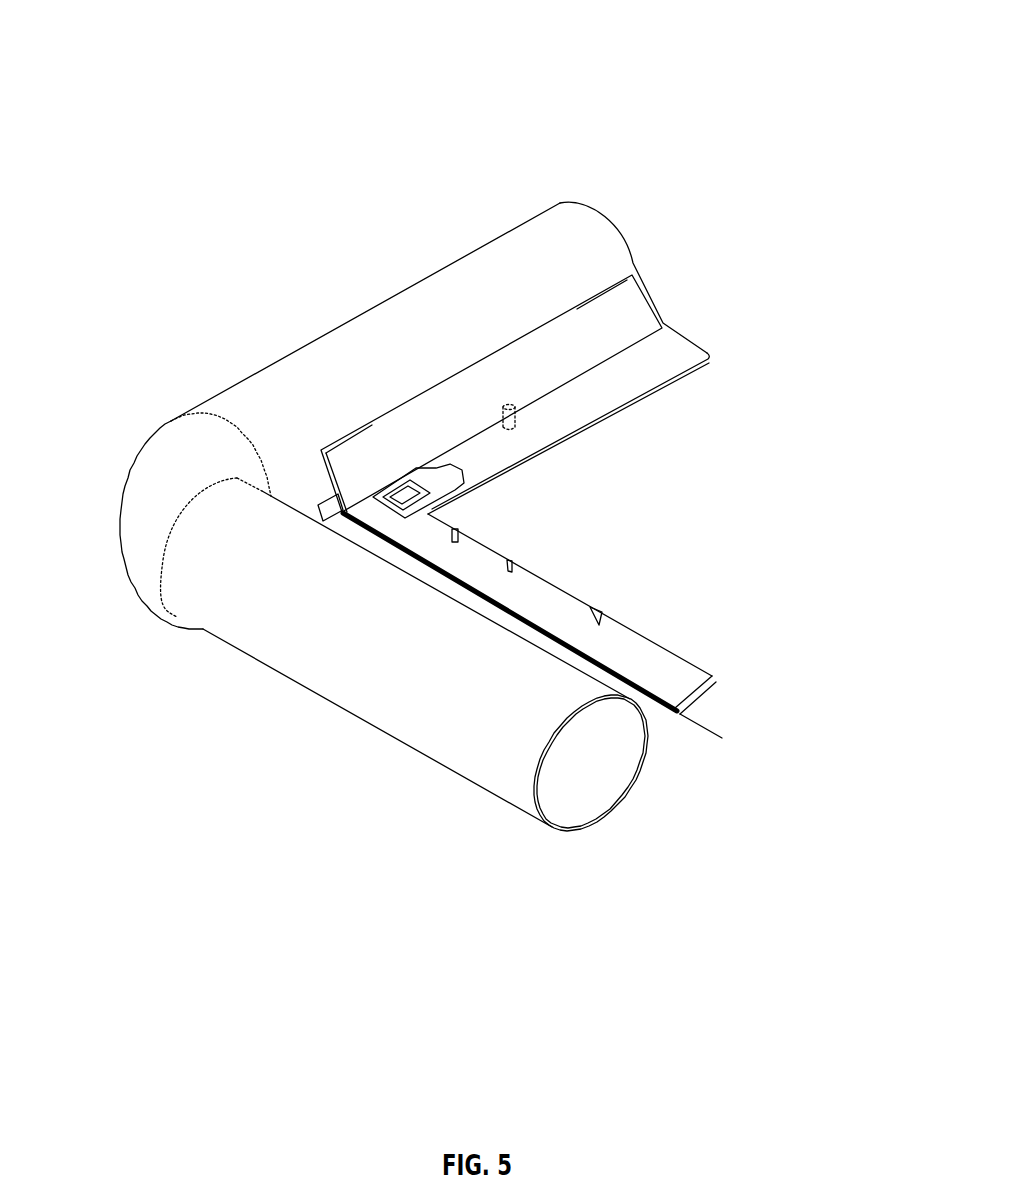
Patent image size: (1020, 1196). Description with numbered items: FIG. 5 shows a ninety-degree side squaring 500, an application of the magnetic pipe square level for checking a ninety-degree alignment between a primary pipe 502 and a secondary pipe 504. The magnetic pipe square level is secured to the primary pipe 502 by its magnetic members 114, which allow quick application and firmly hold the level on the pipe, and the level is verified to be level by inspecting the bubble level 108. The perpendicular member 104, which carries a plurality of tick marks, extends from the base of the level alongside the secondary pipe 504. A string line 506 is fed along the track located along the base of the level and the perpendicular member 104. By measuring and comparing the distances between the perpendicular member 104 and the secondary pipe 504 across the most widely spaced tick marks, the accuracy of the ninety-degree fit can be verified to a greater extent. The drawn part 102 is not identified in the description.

The 90-degree side squaring 500 is at (334, 64).
The primary pipe 502 is at (307, 352).
The secondary pipe 504 is at (234, 634).
The magnetic member 114 is at (612, 281).
The bubble level 108 is at (427, 492).
The clips 102 is at (456, 532).
The perpendicular member 104 is at (697, 678).
The string line 506 is at (702, 724).